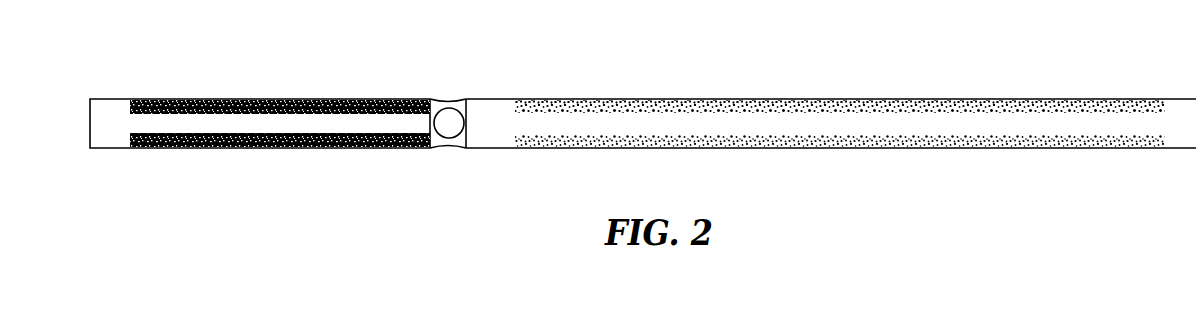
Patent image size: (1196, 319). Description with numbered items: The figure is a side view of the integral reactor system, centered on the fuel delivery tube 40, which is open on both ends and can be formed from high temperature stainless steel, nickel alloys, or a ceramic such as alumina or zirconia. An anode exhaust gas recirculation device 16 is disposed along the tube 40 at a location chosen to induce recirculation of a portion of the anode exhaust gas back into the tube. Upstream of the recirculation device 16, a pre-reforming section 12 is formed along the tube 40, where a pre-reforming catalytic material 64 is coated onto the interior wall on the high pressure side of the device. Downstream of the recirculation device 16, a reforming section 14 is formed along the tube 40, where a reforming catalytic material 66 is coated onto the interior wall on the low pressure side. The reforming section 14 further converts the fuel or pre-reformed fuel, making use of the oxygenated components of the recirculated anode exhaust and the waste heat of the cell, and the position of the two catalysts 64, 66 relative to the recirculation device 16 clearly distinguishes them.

The pre-reforming section 12 is at (165, 98).
The reforming section 14 is at (797, 98).
The anode exhaust gas recirculation device 16 is at (449, 98).
The pre-reforming catalytic material 64 is at (320, 140).
The reforming catalytic material 66 is at (605, 98).
The tube 40 is at (982, 137).